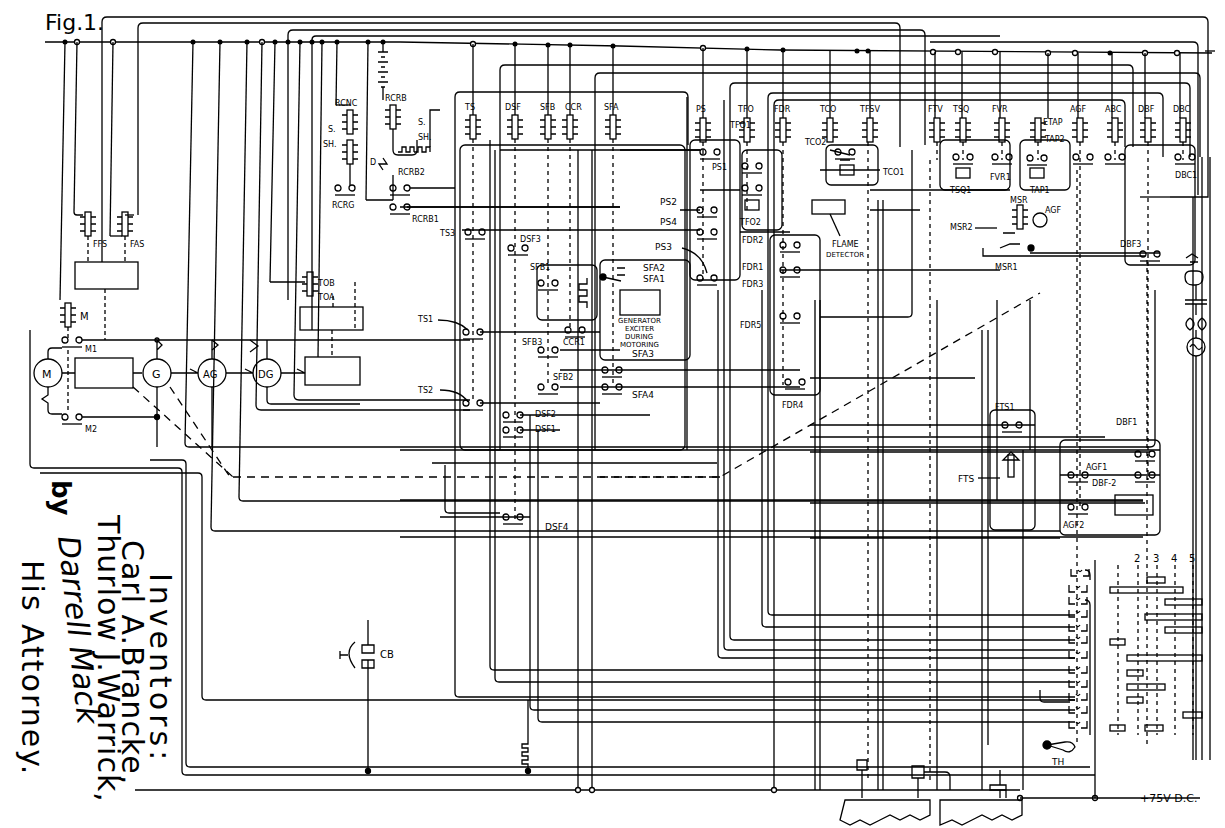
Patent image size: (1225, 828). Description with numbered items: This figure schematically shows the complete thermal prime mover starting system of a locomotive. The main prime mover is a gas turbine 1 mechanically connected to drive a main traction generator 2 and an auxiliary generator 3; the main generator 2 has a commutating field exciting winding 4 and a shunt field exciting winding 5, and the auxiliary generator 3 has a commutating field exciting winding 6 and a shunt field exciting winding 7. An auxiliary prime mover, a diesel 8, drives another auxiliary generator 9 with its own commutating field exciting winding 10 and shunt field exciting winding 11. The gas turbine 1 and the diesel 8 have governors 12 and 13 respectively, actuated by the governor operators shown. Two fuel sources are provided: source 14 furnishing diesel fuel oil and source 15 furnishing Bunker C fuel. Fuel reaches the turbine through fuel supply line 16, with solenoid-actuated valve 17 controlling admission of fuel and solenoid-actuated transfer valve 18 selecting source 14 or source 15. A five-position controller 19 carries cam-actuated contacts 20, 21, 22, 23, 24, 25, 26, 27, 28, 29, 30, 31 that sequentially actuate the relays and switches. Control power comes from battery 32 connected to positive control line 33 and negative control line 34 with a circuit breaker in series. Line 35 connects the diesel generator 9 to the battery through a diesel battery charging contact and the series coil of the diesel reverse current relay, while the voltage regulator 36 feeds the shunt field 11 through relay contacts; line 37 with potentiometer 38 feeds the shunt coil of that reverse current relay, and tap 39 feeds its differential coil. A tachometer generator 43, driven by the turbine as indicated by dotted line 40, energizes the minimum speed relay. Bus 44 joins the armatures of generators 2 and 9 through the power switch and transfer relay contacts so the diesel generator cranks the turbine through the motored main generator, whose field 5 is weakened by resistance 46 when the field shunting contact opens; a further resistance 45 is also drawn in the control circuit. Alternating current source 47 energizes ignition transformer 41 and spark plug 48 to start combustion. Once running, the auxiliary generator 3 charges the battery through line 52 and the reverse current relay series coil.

The gas turbine 1 is at (117, 361).
The main traction generator 2 is at (165, 350).
The auxiliary generator 3 is at (221, 350).
The commutating field exciting winding 4 is at (155, 340).
The shunt field exciting winding 5 is at (184, 378).
The commutating field exciting winding 6 is at (209, 340).
The shunt field exciting winding 7 is at (238, 378).
The diesel 8 is at (337, 361).
The auxiliary generator 9 is at (249, 349).
The commutating field exciting winding 10 is at (267, 340).
The shunt field exciting winding 11 is at (294, 376).
The governor 12 is at (138, 277).
The governor 13 is at (300, 317).
The source 14 is at (845, 808).
The source 15 is at (1022, 808).
The fuel supply line 16 is at (447, 765).
The solenoid-actuated valve 17 is at (855, 760).
The solenoid-actuated transfer valve 18 is at (924, 766).
The controller 19 is at (1105, 679).
The cam-actuated contact 20 is at (1078, 563).
The cam-actuated contact 21 is at (1070, 586).
The cam-actuated contact 22 is at (1070, 602).
The cam-actuated contact 23 is at (1088, 618).
The cam-actuated contact 24 is at (1092, 623).
The cam-actuated contact 25 is at (1088, 644).
The cam-actuated contact 26 is at (1092, 662).
The cam-actuated contact 27 is at (1092, 676).
The cam-actuated contact 28 is at (1092, 690).
The cam-actuated contact 29 is at (1063, 699).
The cam-actuated contact 30 is at (1092, 706).
The cam-actuated contact 31 is at (1092, 720).
The battery 32 is at (388, 58).
The positive control line 33 is at (183, 790).
The negative control line 34 is at (163, 42).
The line 35 is at (400, 406).
The voltage regulator 36 is at (1115, 500).
The line 37 is at (1162, 196).
The potentiometer 38 is at (422, 158).
The tap 39 is at (410, 157).
The dotted line 40 is at (688, 478).
The ignition transformer 41 is at (1191, 260).
The tachometer generator 43 is at (1046, 226).
The bus 44 is at (586, 385).
The resistor 45 is at (523, 745).
The resistance 46 is at (578, 300).
The source of alternating current 47 is at (1192, 355).
The spark plug 48 is at (1198, 265).
The line 52 is at (315, 533).